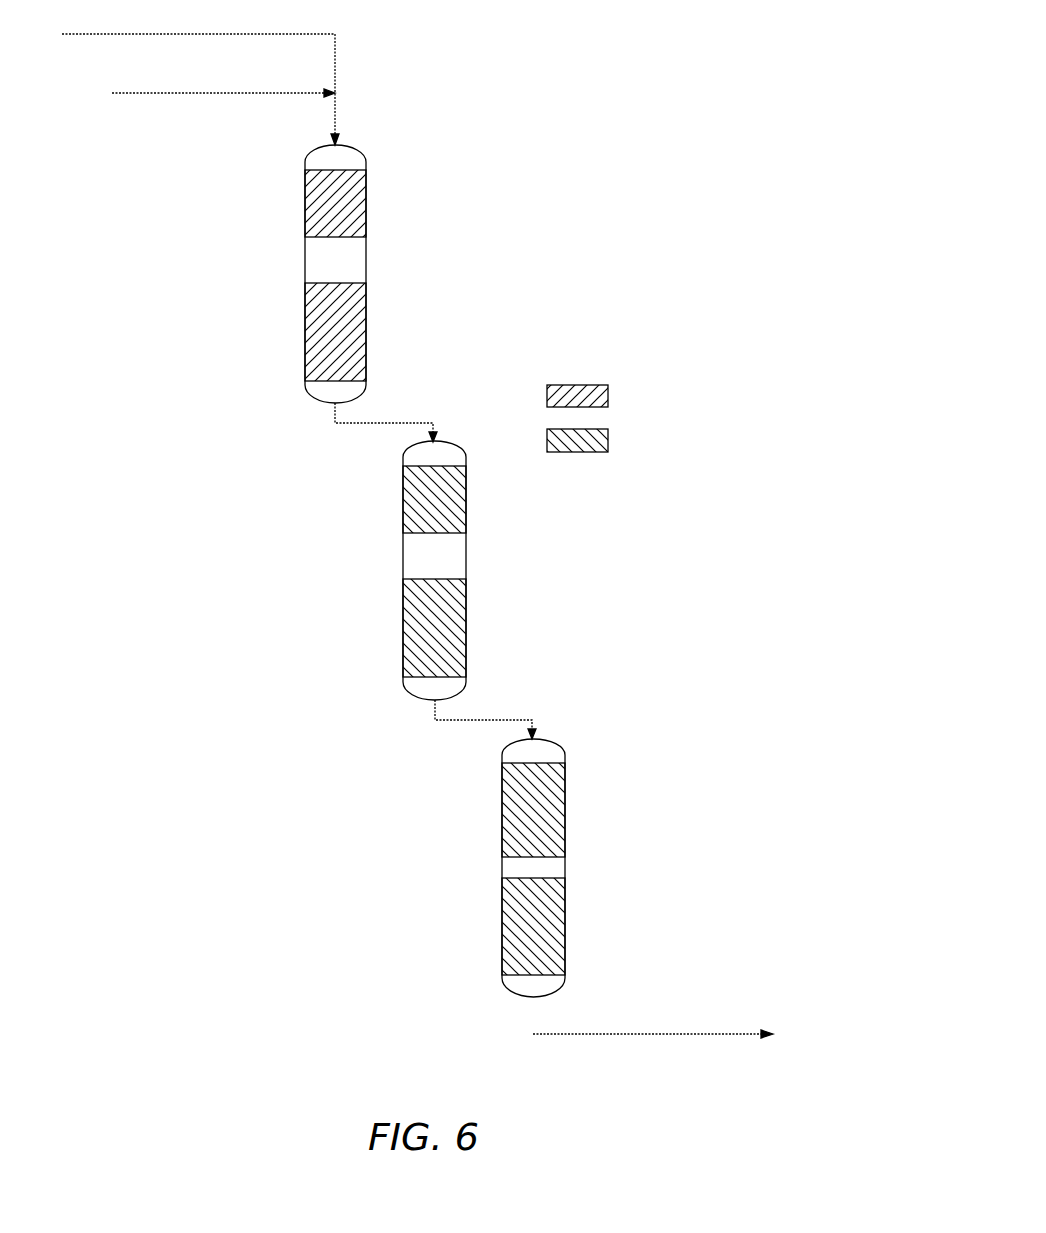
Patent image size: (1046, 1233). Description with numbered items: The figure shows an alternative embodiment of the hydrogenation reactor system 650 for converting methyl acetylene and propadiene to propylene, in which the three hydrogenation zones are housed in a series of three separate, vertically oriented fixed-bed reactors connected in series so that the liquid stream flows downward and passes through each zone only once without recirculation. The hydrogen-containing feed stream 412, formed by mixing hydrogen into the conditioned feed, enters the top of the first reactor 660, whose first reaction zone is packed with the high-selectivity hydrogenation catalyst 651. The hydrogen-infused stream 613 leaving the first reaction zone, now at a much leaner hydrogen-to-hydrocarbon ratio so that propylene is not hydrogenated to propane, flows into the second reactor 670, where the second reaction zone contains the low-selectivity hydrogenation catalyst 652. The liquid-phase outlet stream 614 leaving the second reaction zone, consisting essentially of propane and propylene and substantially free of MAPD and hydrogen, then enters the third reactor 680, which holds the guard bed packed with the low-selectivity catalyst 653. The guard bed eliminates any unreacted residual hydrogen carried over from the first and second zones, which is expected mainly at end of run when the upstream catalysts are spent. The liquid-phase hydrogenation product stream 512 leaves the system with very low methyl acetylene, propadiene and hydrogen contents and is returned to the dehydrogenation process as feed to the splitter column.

The hydrogenation reactor system 650 is at (617, 119).
The hydrogen-containing feed stream 412 is at (222, 78).
The high-selectivity hydrogenation catalyst 651 is at (332, 220).
The reactor 660 is at (305, 290).
The stream leaving the first reaction zone 613 is at (386, 418).
The low-selectivity hydrogenation catalyst 652 is at (420, 515).
The reactor 670 is at (403, 592).
The liquid-phase outlet stream leaving the second reaction zone 614 is at (485, 717).
The low-selectivity catalyst 653 is at (510, 805).
The reactor 680 is at (502, 848).
The hydrogenation product stream 512 is at (654, 1058).